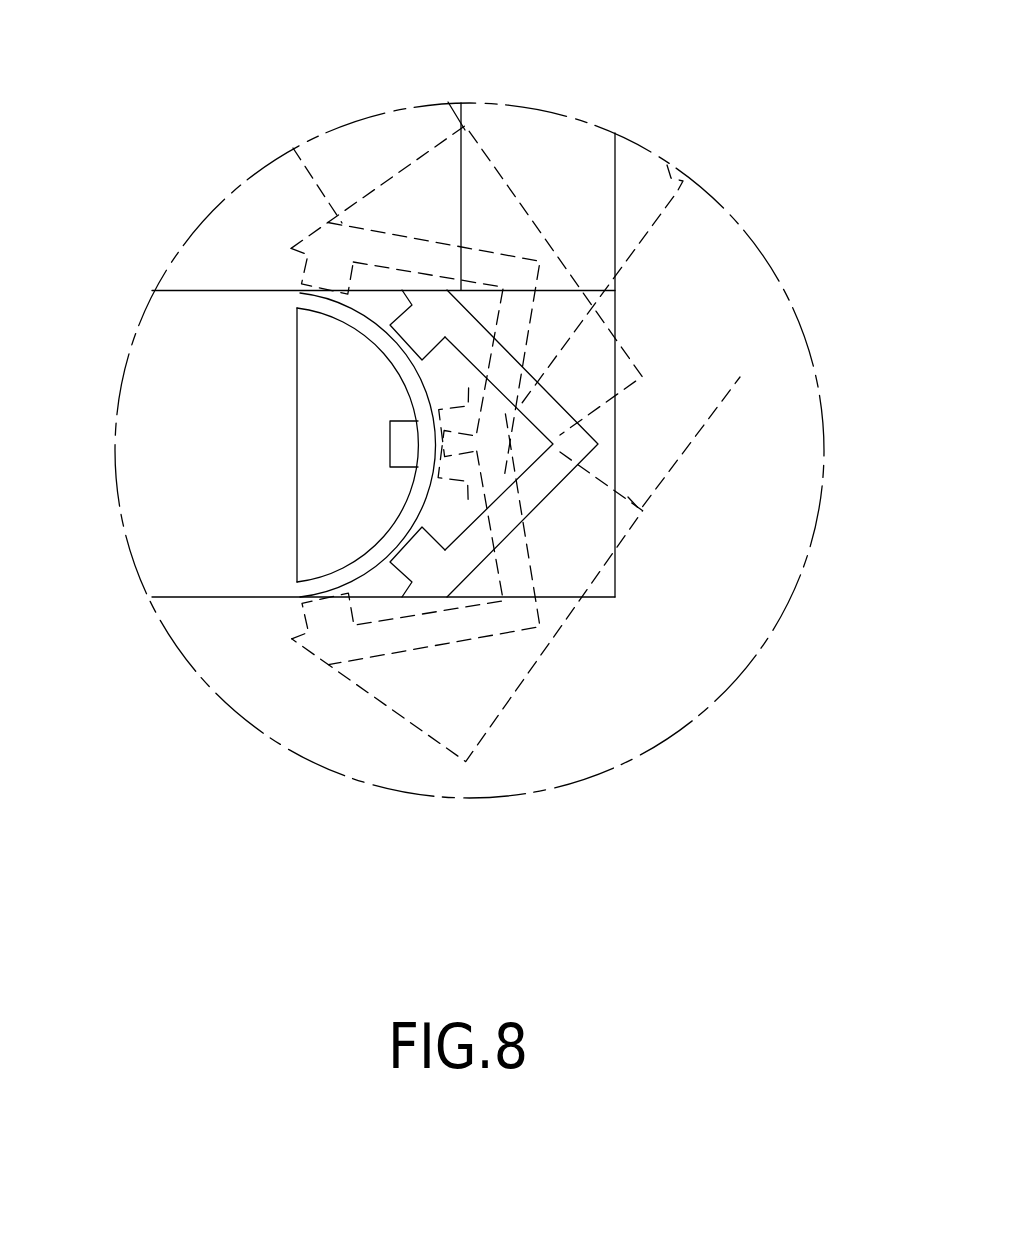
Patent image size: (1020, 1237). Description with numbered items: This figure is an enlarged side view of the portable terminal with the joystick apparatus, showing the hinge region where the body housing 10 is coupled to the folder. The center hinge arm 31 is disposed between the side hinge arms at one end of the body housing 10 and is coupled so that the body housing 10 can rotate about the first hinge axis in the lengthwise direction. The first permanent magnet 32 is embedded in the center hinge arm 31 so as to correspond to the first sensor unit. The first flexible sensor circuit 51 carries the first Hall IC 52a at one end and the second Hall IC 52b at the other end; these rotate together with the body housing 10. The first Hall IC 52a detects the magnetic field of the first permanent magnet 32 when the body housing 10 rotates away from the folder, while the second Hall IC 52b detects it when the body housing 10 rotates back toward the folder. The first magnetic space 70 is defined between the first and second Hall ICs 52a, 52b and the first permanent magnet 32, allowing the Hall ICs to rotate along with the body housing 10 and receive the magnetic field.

The body housing 10 is at (732, 253).
The center hinge arm 31 is at (228, 307).
The first permanent magnet 32 is at (403, 443).
The first flexible sensor circuit 51 is at (545, 415).
The first Hall IC 52a is at (423, 330).
The second Hall IC 52b is at (422, 564).
The first magnetic space 70 is at (445, 517).